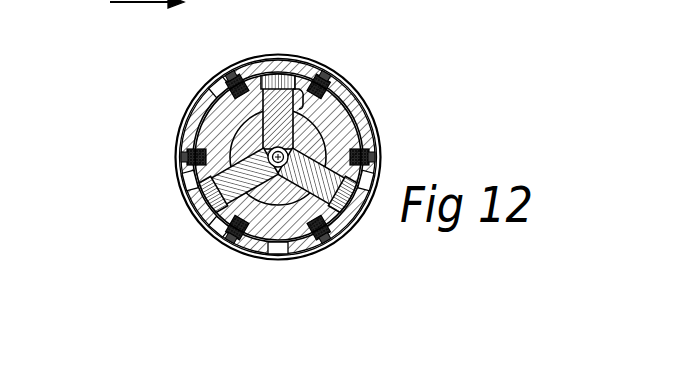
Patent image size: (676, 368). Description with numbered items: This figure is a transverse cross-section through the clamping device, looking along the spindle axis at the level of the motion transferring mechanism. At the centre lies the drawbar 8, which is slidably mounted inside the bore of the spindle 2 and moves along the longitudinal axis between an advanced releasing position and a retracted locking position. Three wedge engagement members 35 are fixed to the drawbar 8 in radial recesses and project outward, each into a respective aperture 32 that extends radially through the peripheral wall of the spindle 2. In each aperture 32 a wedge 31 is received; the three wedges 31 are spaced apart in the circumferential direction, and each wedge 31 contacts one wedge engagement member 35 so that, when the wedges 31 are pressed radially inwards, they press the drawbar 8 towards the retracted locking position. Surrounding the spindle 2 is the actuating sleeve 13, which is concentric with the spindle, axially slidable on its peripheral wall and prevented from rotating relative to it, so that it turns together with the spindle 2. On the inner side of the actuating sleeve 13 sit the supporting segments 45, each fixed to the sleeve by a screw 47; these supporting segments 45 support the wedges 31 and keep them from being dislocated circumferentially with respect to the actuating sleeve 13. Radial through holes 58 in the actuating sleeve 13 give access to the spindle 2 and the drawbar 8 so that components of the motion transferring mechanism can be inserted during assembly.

The spindle 2 is at (288, 241).
The drawbar 8 is at (262, 218).
The actuating sleeve 13 is at (208, 213).
The wedge 31 is at (265, 77).
The aperture 32 is at (298, 80).
The wedge engagement member 35 is at (270, 117).
The supporting segment 45 is at (347, 110).
The screw 47 is at (328, 84).
The through hole 58 is at (362, 118).